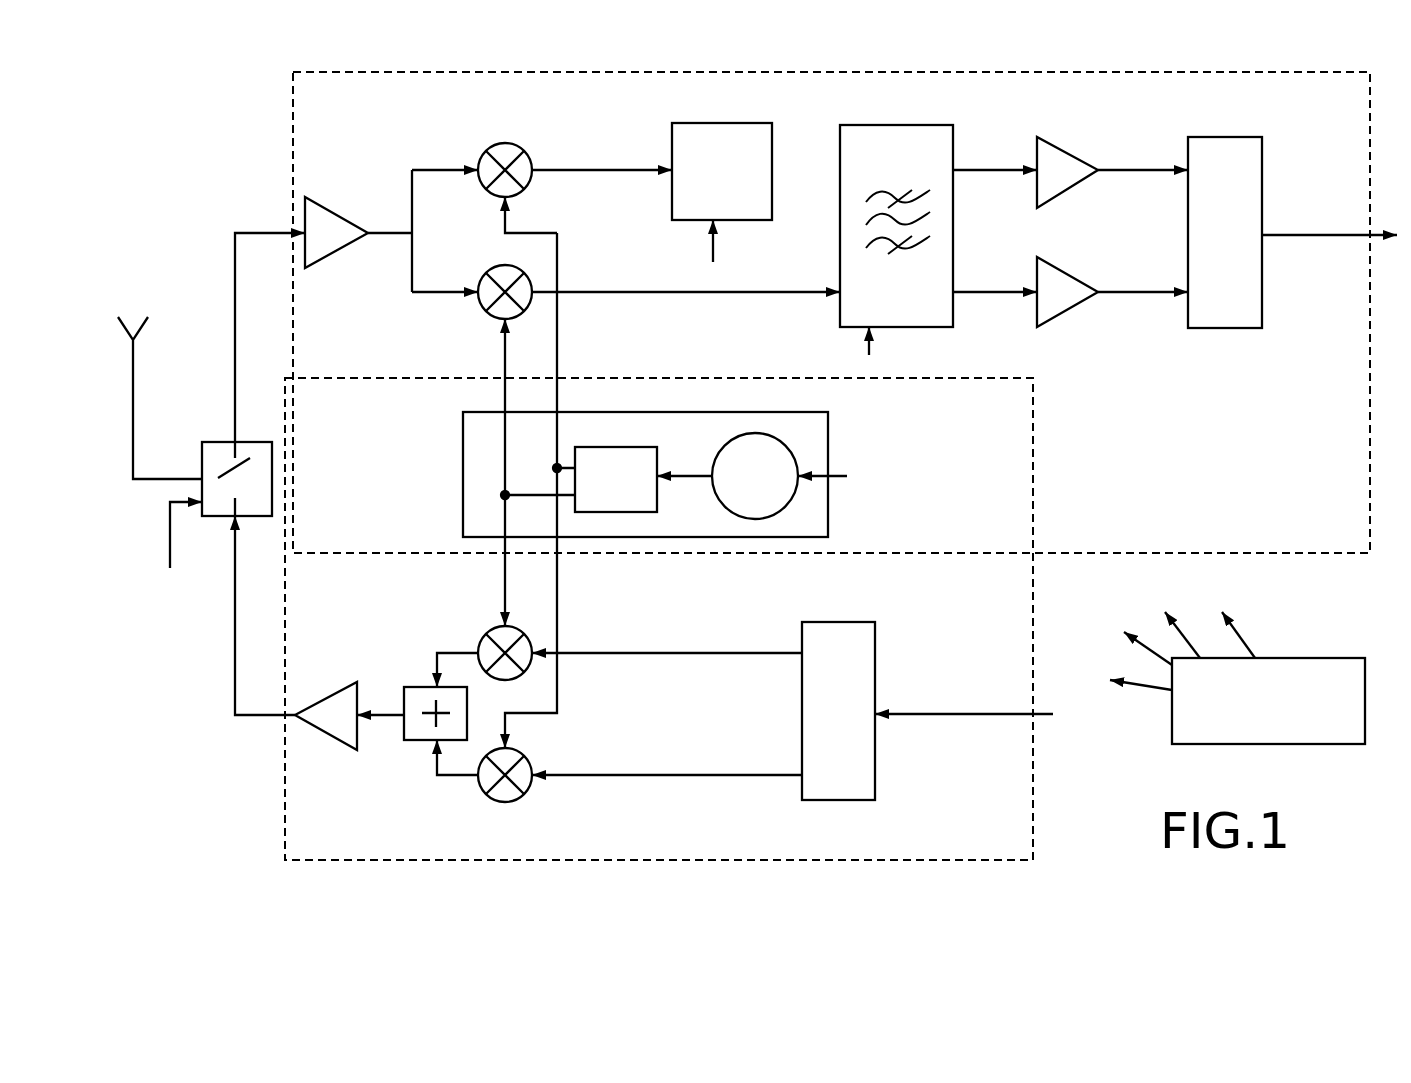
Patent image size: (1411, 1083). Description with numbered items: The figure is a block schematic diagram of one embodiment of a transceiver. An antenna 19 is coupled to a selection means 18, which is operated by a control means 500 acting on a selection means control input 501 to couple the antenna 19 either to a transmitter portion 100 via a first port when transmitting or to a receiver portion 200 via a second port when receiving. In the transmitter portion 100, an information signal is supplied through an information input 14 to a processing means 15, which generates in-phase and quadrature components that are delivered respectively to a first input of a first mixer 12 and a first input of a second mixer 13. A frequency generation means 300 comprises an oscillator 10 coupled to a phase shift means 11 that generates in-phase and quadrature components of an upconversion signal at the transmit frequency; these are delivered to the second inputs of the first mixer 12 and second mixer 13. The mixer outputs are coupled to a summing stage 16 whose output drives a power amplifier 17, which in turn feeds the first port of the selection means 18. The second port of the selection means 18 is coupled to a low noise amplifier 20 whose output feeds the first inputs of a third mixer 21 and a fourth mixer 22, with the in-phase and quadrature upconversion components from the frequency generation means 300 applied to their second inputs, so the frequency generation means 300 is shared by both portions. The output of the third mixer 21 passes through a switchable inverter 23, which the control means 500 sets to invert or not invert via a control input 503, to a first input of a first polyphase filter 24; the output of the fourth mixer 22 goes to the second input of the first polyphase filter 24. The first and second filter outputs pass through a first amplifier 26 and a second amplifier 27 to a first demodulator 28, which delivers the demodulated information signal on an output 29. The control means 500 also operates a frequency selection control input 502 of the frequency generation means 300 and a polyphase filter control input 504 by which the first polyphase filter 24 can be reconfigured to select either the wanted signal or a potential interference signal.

The oscillator 10 is at (727, 424).
The phase shift means 11 is at (579, 490).
The first mixer 12 is at (522, 800).
The second mixer 13 is at (490, 636).
The information input 14 is at (920, 718).
The processing means 15 is at (703, 470).
The summing stage 16 is at (412, 685).
The power amplifier 17 is at (335, 737).
The selection means 18 is at (202, 460).
The antenna 19 is at (148, 325).
The low noise amplifier 20 is at (325, 210).
The third mixer 21 is at (515, 145).
The fourth mixer 22 is at (483, 305).
The switchable inverter 23 is at (710, 123).
The first polyphase filter 24 is at (890, 125).
The first amplifier 26 is at (1060, 152).
The second amplifier 27 is at (1060, 313).
The first demodulator 28 is at (1225, 232).
The output 29 is at (1277, 230).
The transmitter portion 100 is at (285, 770).
The receiver portion 200 is at (300, 130).
The frequency generation means 300 is at (1090, 465).
The control means 500 is at (1268, 701).
The selection means control input 501 is at (170, 568).
The frequency selection control input 502 is at (833, 473).
The control input 503 is at (713, 250).
The polyphase filter control input 504 is at (869, 345).